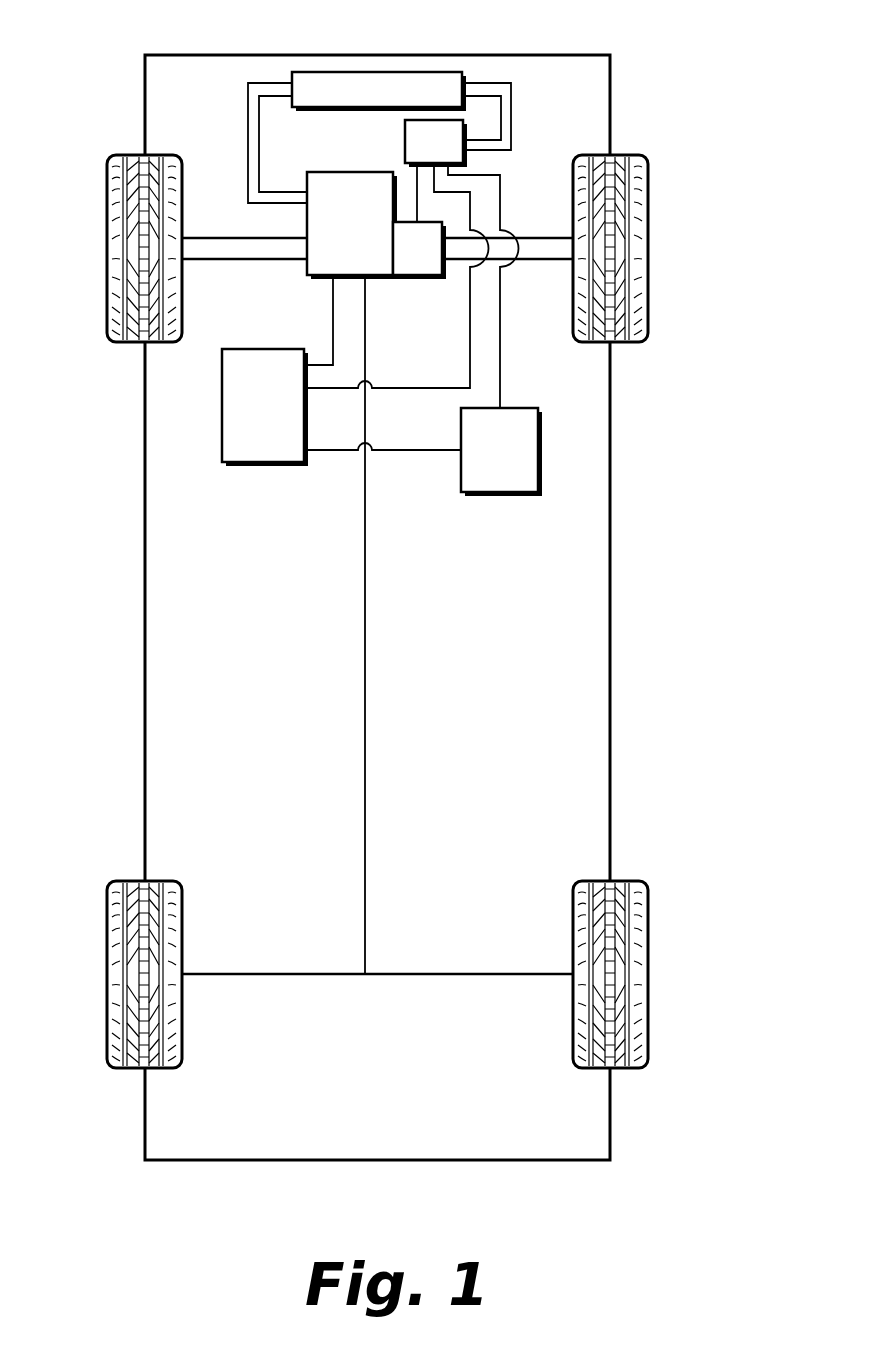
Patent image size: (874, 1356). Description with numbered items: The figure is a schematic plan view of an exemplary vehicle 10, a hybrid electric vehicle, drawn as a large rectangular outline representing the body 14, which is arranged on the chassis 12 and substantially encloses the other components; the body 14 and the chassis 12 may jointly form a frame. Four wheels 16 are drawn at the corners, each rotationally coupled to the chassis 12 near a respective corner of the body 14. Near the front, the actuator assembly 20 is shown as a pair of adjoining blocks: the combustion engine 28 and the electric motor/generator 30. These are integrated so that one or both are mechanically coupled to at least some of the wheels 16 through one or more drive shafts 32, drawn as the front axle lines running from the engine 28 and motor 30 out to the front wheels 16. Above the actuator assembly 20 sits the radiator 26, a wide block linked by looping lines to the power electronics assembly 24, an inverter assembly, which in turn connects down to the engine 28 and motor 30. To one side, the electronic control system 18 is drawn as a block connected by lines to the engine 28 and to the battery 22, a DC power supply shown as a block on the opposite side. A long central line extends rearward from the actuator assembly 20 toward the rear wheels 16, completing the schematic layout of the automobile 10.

The vehicle 10 is at (648, 58).
The chassis 12 is at (367, 817).
The body 14 is at (145, 458).
The wheels 16 is at (115, 227).
The electronic control system 18 is at (276, 414).
The actuator assembly 20 is at (400, 295).
The battery 22 is at (512, 461).
The power electronics assembly 24 is at (448, 154).
The radiator 26 is at (342, 82).
The combustion engine 28 is at (366, 232).
The electric motor/generator 30 is at (432, 260).
The drive shafts 32 is at (212, 247).